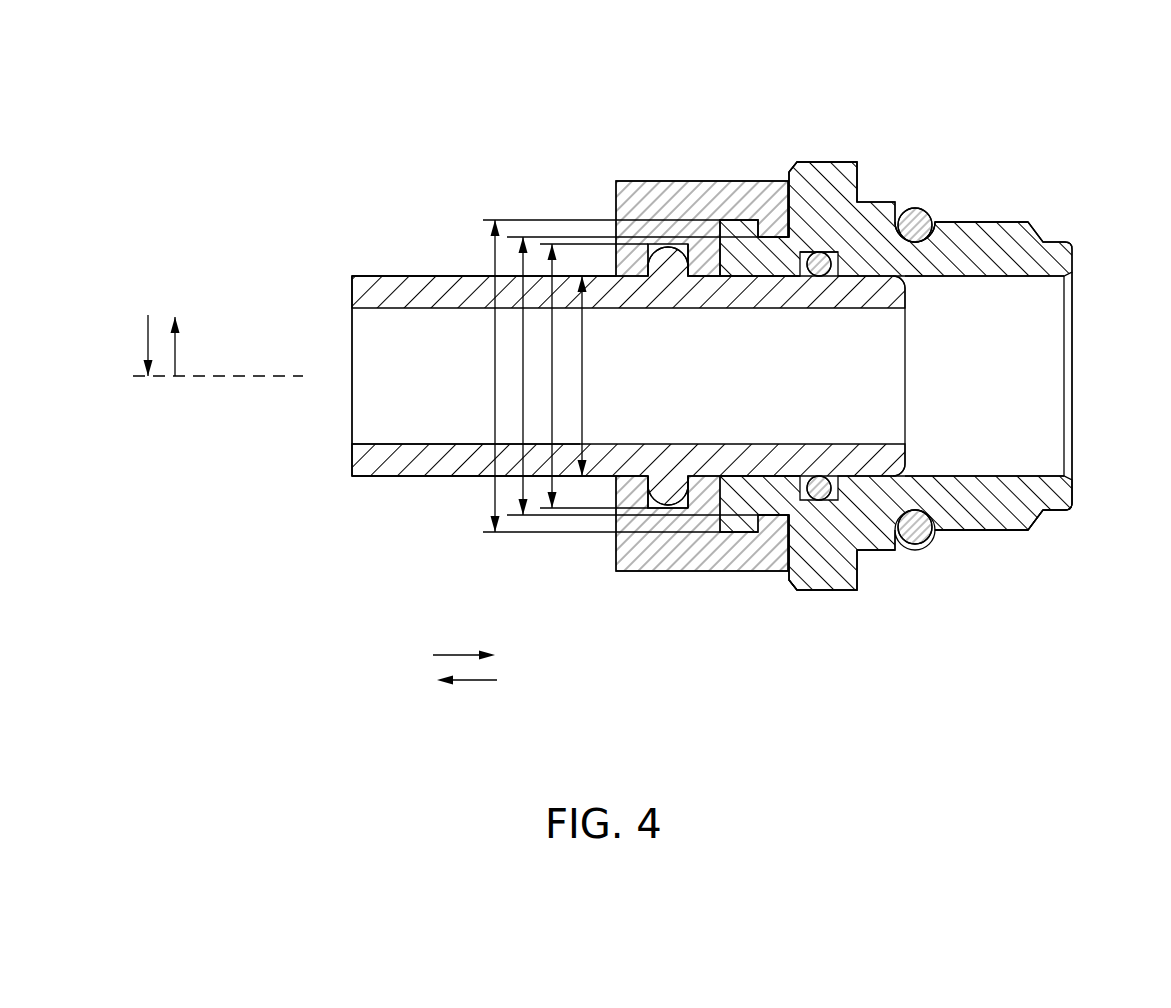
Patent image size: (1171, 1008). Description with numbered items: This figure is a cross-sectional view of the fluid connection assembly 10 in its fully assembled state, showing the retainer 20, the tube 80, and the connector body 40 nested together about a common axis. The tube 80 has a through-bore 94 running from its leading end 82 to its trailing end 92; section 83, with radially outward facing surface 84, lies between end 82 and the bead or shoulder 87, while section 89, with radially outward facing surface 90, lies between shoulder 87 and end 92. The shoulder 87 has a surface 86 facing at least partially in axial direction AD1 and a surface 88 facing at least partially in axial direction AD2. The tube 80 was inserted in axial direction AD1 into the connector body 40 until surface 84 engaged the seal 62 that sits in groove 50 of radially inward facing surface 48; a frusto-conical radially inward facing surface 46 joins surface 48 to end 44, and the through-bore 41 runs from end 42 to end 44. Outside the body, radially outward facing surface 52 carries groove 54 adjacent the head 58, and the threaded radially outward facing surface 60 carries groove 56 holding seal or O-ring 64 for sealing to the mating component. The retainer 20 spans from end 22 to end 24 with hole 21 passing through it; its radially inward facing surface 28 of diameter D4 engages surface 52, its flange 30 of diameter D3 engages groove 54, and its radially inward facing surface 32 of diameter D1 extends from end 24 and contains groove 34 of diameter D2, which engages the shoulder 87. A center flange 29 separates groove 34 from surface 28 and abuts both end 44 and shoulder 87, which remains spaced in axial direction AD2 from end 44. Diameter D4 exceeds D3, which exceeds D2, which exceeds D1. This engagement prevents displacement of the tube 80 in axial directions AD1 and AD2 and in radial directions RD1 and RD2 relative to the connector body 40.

The fluid connection assembly 10 is at (246, 159).
The retainer 20 is at (633, 181).
The hole 21 is at (633, 477).
The end 22 is at (798, 560).
The end 24 is at (615, 557).
The radially inward facing surface 28 is at (743, 532).
The center flange 29 is at (707, 262).
The flange 30 is at (768, 520).
The radially inward facing surface 32 is at (700, 490).
The groove 34 is at (655, 505).
The connector body 40 is at (1067, 262).
The through-bore 41 is at (1040, 403).
The end 42 is at (1073, 493).
The end 44 is at (744, 219).
The radially inward facing surface 46 is at (724, 230).
The radially inward facing surface 48 is at (1000, 532).
The groove 50 is at (815, 250).
The radially outward facing surface 52 is at (745, 236).
The groove 54 is at (822, 250).
The groove 56 is at (952, 230).
The head 58 is at (850, 162).
The radially outward facing surface 60 is at (1021, 222).
The seal 62 is at (831, 258).
The seal or O-ring 64 is at (935, 238).
The tube 80 is at (455, 276).
The end 82 is at (905, 298).
The section 83 is at (860, 505).
The radially outward facing surface 84 is at (788, 298).
The surface 86 is at (686, 266).
The bead or shoulder 87 is at (668, 250).
The surface 88 is at (650, 262).
The section 89 is at (408, 496).
The radially outward facing surface 90 is at (380, 276).
The end 92 is at (350, 462).
The through-bore 94 is at (370, 364).
The diameter D1 is at (581, 432).
The diameter D2 is at (551, 395).
The diameter D3 is at (522, 350).
The diameter D4 is at (494, 488).
The radial direction RD1 is at (178, 357).
The radial direction RD2 is at (147, 337).
The axial direction AD1 is at (458, 653).
The axial direction AD2 is at (477, 683).